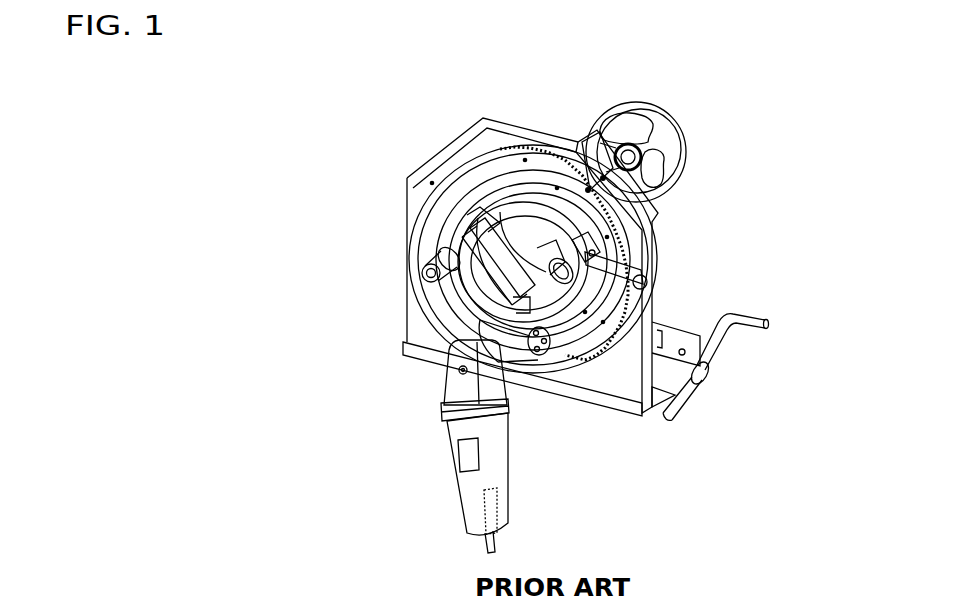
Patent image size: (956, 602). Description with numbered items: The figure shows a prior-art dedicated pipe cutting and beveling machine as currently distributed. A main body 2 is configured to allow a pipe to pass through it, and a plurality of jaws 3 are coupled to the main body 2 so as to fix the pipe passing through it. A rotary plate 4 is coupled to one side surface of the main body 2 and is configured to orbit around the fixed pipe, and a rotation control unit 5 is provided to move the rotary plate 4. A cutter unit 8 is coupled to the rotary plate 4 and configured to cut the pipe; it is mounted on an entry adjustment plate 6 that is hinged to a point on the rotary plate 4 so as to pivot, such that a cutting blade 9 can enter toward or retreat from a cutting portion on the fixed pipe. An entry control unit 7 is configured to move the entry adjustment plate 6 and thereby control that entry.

The main body 2 is at (510, 128).
The jaws 3 is at (500, 237).
The rotary plate 4 is at (432, 199).
The rotation control unit 5 is at (660, 198).
The entry adjustment plate 6 is at (563, 365).
The entry control unit 7 is at (602, 279).
The cutter unit 8 is at (445, 330).
The cutting blade 9 is at (477, 293).